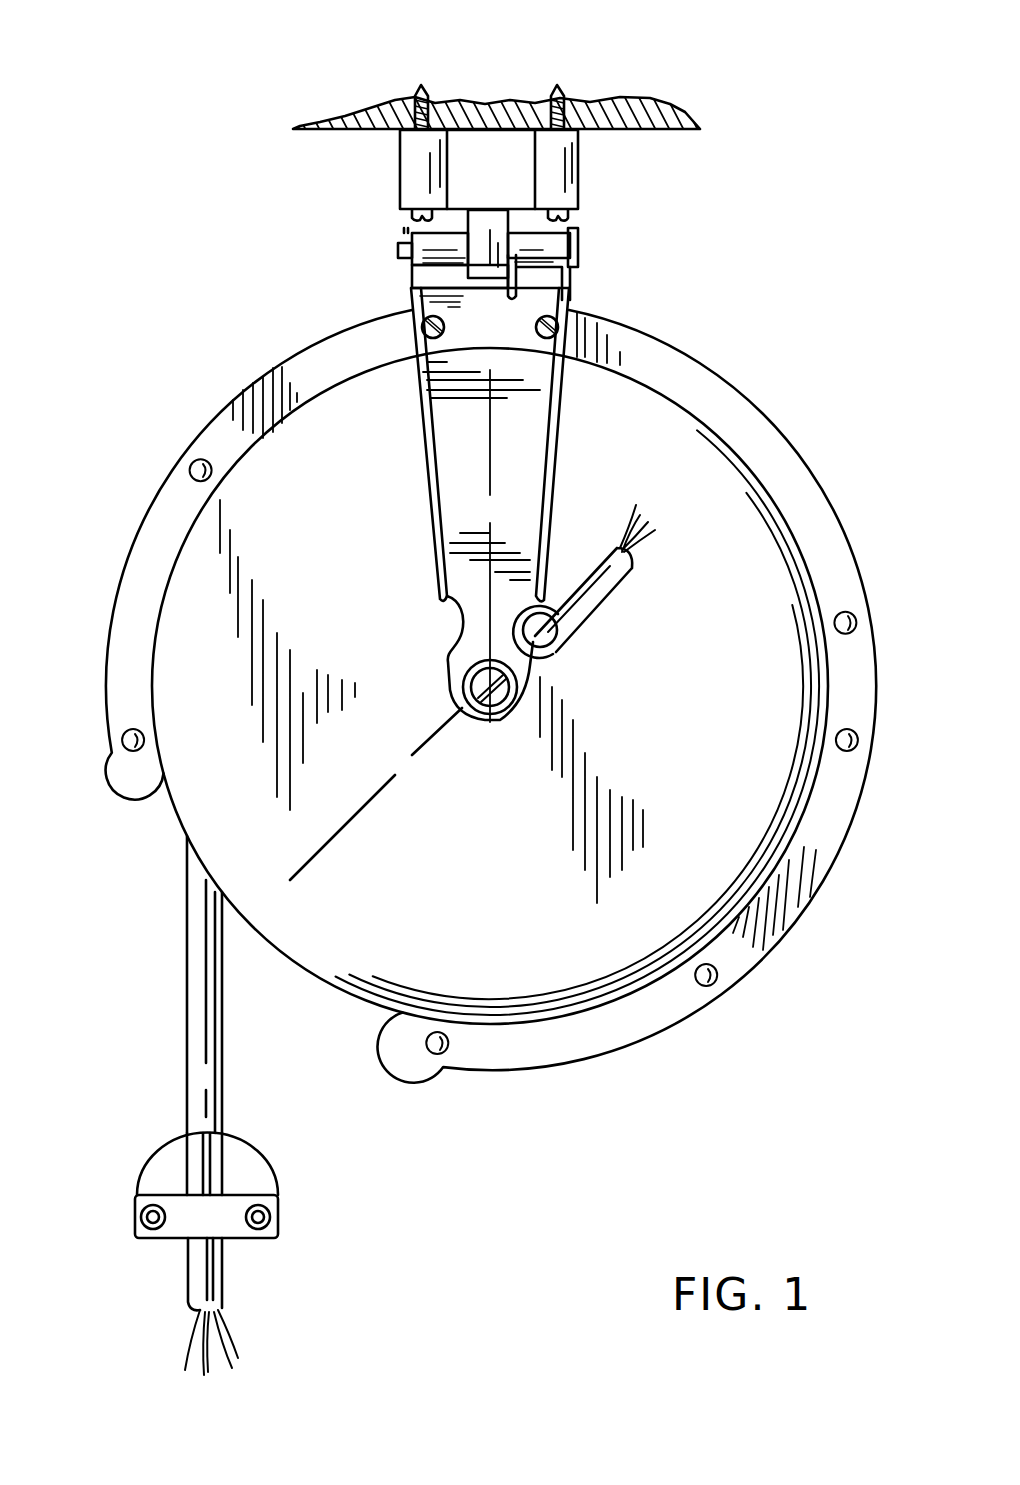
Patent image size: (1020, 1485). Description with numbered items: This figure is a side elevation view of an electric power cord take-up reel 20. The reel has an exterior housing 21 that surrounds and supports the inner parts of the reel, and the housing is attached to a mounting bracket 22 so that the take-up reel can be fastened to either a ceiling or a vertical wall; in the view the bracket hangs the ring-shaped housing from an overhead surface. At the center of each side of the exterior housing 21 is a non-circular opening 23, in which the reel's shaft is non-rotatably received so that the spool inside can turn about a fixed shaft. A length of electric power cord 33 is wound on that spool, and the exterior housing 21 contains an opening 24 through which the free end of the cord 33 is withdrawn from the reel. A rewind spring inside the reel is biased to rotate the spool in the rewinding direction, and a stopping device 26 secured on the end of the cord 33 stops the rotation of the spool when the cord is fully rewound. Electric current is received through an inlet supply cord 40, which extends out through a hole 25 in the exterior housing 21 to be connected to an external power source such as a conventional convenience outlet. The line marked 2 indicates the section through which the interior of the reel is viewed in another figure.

The section line 2- 2 is at (555, 45).
The electric power cord take-up reel 20 is at (474, 696).
The exterior housing 21 is at (133, 540).
The mounting bracket 22 is at (421, 452).
The non-circular openings 23 is at (490, 722).
The opening 24 is at (271, 1022).
The hole 25 is at (553, 652).
The stopping device 26 is at (137, 1177).
The electric power cord 33 is at (187, 1283).
The inlet supply cord 40 is at (627, 582).